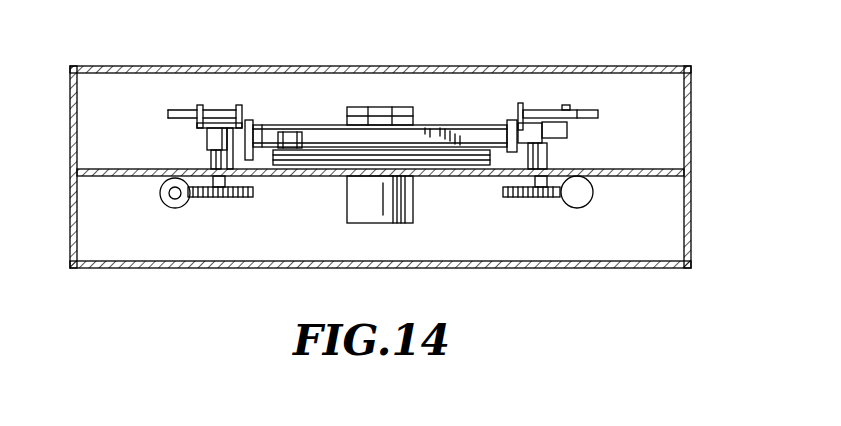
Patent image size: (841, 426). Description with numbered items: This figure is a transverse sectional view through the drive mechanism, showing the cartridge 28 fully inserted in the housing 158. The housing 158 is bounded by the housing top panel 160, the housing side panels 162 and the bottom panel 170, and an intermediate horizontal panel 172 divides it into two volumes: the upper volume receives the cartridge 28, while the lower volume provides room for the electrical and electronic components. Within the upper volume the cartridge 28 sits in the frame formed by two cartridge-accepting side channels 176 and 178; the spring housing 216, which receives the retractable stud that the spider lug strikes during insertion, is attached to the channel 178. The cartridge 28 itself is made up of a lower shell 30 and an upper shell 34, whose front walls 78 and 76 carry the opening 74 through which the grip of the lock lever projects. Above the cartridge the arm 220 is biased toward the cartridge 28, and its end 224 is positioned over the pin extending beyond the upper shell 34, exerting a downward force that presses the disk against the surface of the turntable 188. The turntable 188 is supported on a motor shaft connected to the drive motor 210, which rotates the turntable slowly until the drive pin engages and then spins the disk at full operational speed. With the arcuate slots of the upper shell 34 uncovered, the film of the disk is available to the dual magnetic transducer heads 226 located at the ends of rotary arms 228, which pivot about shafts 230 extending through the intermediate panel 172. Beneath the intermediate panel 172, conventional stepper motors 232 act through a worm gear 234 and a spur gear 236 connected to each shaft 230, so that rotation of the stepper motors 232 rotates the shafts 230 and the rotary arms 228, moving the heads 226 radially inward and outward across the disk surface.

The housing 158 is at (114, 62).
The housing top panel 160 is at (178, 66).
The housing side panels 162 is at (73, 141).
The bottom panel 170 is at (115, 268).
The intermediate horizontal panel 172 is at (105, 177).
The cartridge-accepting side channel 176 is at (251, 120).
The cartridge-accepting side channel 178 is at (519, 119).
The upper shell 34 is at (318, 120).
The front wall 78 is at (466, 130).
The opening 74 is at (280, 151).
The lower shell 30 is at (337, 172).
The cartridge 28 is at (320, 172).
The front wall 76 is at (446, 174).
The turntable 188 is at (441, 178).
The drive motor 210 is at (373, 223).
The spring housing 216 is at (533, 124).
The arm 220 is at (414, 106).
The end of the arm 224 is at (392, 106).
The magnetic transducer heads 226 is at (568, 137).
The rotary arms 228 is at (168, 115).
The shafts 230 is at (209, 152).
The stepper motors 232 is at (166, 203).
The worm gear 234 is at (178, 200).
The spur gear 236 is at (240, 198).